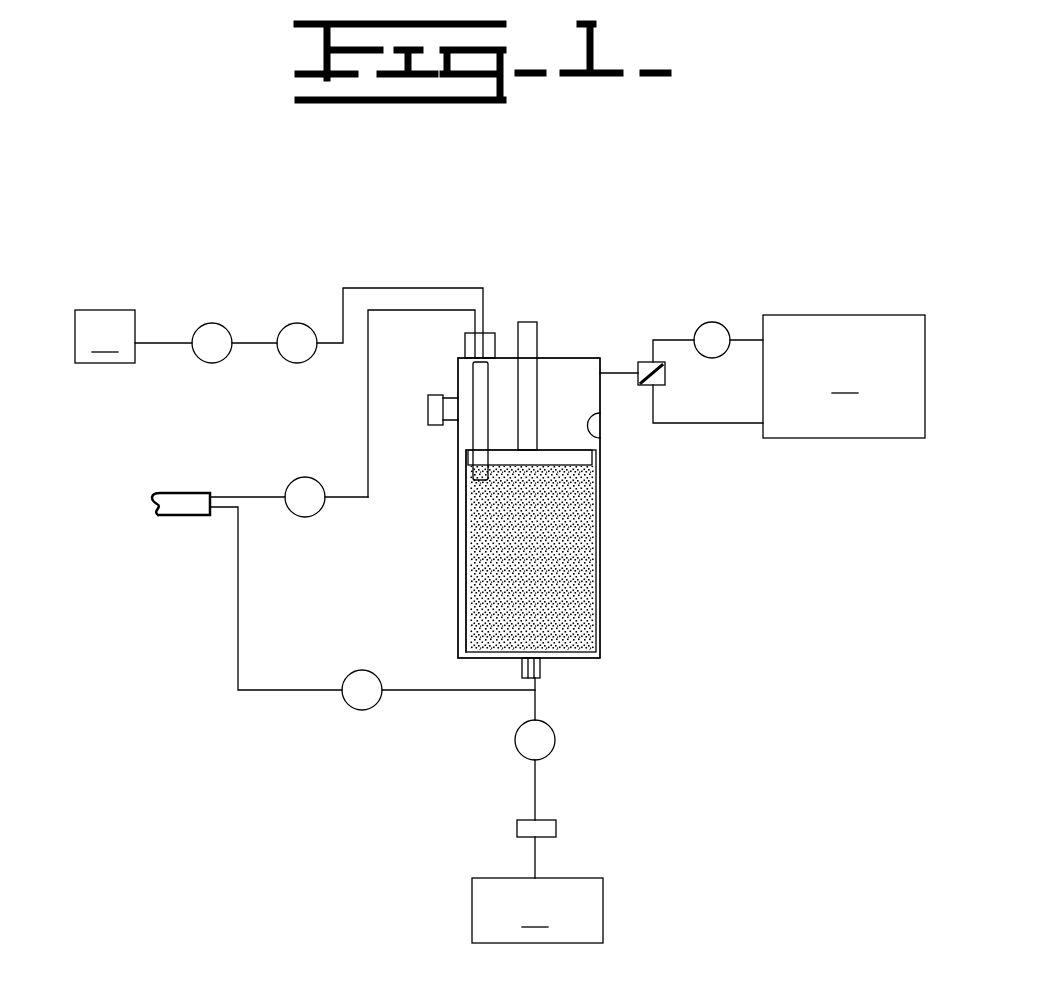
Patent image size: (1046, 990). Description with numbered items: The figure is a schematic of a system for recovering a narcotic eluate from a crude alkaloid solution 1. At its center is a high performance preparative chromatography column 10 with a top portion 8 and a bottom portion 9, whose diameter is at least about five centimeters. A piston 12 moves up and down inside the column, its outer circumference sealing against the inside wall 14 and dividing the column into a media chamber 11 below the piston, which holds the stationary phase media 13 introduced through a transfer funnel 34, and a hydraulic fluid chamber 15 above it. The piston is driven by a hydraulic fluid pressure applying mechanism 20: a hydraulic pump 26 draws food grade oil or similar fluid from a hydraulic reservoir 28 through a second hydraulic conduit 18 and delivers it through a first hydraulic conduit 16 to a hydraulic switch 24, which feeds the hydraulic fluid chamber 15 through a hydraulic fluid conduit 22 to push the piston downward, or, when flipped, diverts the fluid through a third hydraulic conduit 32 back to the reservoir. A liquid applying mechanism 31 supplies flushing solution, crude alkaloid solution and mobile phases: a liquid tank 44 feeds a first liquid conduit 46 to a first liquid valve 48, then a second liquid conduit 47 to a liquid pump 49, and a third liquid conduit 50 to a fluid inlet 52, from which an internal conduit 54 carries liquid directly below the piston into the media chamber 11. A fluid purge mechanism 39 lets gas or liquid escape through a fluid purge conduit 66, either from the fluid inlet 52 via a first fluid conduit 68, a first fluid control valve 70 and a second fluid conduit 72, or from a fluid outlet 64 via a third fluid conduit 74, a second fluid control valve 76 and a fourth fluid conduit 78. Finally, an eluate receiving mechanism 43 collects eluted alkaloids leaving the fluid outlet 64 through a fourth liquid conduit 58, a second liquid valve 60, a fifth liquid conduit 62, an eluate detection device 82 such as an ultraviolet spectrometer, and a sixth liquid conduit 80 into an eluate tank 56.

The crude alkaloid solution 1 is at (823, 243).
The top portion 8 is at (458, 368).
The bottom portion 9 is at (607, 623).
The preparative chromatography column 10 is at (637, 555).
The media chamber 11 is at (597, 589).
The piston 12 is at (583, 458).
The stationary phase media 13 is at (577, 547).
The inside wall 14 is at (600, 440).
The hydraulic fluid chamber 15 is at (562, 385).
The first hydraulic conduit 16 is at (662, 340).
The second hydraulic conduit 18 is at (752, 340).
The hydraulic fluid pressure applying mechanism 20 is at (848, 303).
The hydraulic fluid conduit 22 is at (636, 373).
The hydraulic switch 24 is at (665, 372).
The hydraulic pump 26 is at (712, 322).
The hydraulic reservoir 28 is at (844, 377).
The liquid applying mechanism 31 is at (113, 255).
The third hydraulic conduit 32 is at (735, 423).
The transfer funnel 34 is at (432, 425).
The fluid purge mechanism 39 is at (187, 573).
The eluate receiving mechanism 43 is at (675, 868).
The liquid tank 44 is at (105, 336).
The first liquid conduit 46 is at (157, 342).
The second liquid conduit 47 is at (245, 343).
The first liquid valve 48 is at (210, 323).
The liquid pump 49 is at (297, 323).
The third liquid conduit 50 is at (392, 288).
The fluid inlet 52 is at (493, 340).
The internal conduit 54 is at (470, 435).
The eluate tank 56 is at (537, 910).
The fourth liquid conduit 58 is at (538, 702).
The second liquid valve 60 is at (555, 743).
The fifth liquid conduit 62 is at (538, 790).
The fluid outlet 64 is at (540, 665).
The fluid purge conduit 66 is at (158, 517).
The first fluid conduit 68 is at (368, 357).
The first fluid control valve 70 is at (303, 477).
The second fluid conduit 72 is at (243, 497).
The third fluid conduit 74 is at (478, 690).
The second fluid control valve 76 is at (366, 670).
The fourth fluid conduit 78 is at (262, 690).
The sixth liquid conduit 80 is at (538, 870).
The eluate detection device 82 is at (517, 830).